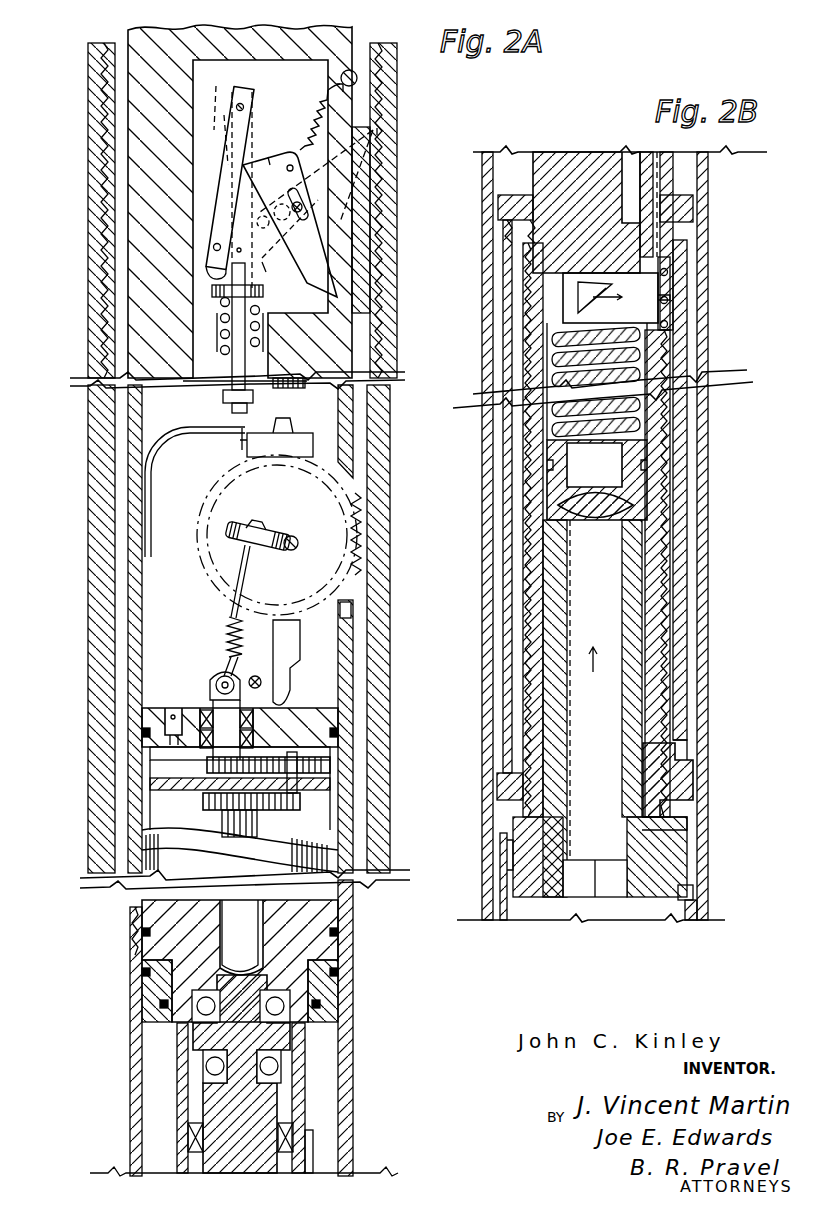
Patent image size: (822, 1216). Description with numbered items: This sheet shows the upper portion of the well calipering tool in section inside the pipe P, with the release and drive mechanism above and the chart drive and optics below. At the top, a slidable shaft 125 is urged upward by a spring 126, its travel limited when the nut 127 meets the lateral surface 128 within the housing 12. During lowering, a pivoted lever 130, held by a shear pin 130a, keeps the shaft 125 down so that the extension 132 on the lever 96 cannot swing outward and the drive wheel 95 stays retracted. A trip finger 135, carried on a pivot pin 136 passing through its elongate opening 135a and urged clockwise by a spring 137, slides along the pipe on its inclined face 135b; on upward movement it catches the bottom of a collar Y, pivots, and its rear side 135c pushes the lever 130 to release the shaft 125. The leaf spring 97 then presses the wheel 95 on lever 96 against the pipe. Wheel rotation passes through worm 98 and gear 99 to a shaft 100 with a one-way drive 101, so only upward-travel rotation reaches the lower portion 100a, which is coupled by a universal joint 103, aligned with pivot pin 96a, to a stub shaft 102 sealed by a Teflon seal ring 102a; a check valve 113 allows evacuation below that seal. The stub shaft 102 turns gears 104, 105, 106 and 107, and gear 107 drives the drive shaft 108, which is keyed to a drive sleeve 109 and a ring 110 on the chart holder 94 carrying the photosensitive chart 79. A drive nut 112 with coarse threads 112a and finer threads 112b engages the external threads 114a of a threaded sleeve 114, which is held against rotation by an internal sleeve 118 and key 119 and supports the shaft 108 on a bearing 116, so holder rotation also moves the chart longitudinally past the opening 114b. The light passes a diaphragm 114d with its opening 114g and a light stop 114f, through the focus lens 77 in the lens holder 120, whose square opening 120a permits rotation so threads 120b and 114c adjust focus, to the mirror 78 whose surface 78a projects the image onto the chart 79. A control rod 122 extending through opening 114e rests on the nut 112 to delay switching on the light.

In FIG. 2A, the housing 12 is at (137, 461).
In FIG. 2B, the housing 12 is at (703, 461).
In FIG. 2A, the pipe P is at (383, 453).
In FIG. 2A, the collar Y is at (390, 182).
In FIG. 2A, the pivoted lever 130 is at (228, 148).
In FIG. 2A, the shear pin 130a is at (226, 246).
In FIG. 2A, the trip finger 135 is at (315, 265).
In FIG. 2A, the elongate opening 135a is at (320, 232).
In FIG. 2A, the inclined face 135b is at (377, 133).
In FIG. 2A, the rear side 135c is at (268, 157).
In FIG. 2A, the pivot pin 136 is at (300, 202).
In FIG. 2A, the spring 137 is at (325, 100).
In FIG. 2A, the slidable shaft 125 is at (229, 408).
In FIG. 2A, the spring 126 is at (224, 300).
In FIG. 2A, the nut 127 is at (227, 396).
In FIG. 2A, the lateral surface 128 is at (268, 388).
In FIG. 2A, the extension 132 is at (282, 418).
In FIG. 2A, the leaf spring 97 is at (173, 453).
In FIG. 2A, the drive wheel 95 is at (350, 541).
In FIG. 2A, the worm 98 is at (292, 536).
In FIG. 2A, the gear 99 is at (266, 527).
In FIG. 2A, the shaft 100 is at (252, 563).
In FIG. 2A, the lower portion of shaft 100a is at (225, 660).
In FIG. 2A, the one-way drive 101 is at (225, 618).
In FIG. 2A, the universal joint 103 is at (212, 676).
In FIG. 2A, the pivoted lever 96 is at (290, 637).
In FIG. 2A, the pivot pin 96a is at (263, 685).
In FIG. 2A, the stub shaft 102 is at (257, 723).
In FIG. 2A, the seal ring 102a is at (205, 717).
In FIG. 2A, the check valve 113 is at (170, 720).
In FIG. 2A, the gear 104 is at (200, 763).
In FIG. 2A, the gear 105 is at (330, 760).
In FIG. 2A, the gear 106 is at (300, 800).
In FIG. 2A, the gear 107 is at (200, 800).
In FIG. 2A, the drive shaft 108 is at (227, 920).
In FIG. 2A, the drive sleeve 109 is at (300, 1067).
In FIG. 2B, the drive sleeve 109 is at (658, 167).
In FIG. 2A, the threaded sleeve 114 is at (210, 1103).
In FIG. 2B, the threaded sleeve 114 is at (650, 563).
In FIG. 2A, the bearing 116 is at (212, 1060).
In FIG. 2B, the ring 110 is at (692, 203).
In FIG. 2B, the chart holder 94 is at (663, 262).
In FIG. 2B, the mirror 78 is at (575, 292).
In FIG. 2B, the mirror surface 78a is at (608, 288).
In FIG. 2B, the chart 79 is at (658, 308).
In FIG. 2B, the external threads 114a is at (660, 508).
In FIG. 2B, the opening 114b is at (658, 320).
In FIG. 2B, the thread 114c is at (658, 810).
In FIG. 2B, the diaphragm 114d is at (664, 280).
In FIG. 2B, the opening 114e is at (502, 852).
In FIG. 2B, the light stop 114f is at (640, 408).
In FIG. 2B, the opening 114g is at (668, 297).
In FIG. 2B, the focus lens 77 is at (593, 493).
In FIG. 2B, the focus lens holder 120 is at (633, 623).
In FIG. 2B, the square opening 120a is at (608, 887).
In FIG. 2B, the thread 120b is at (687, 838).
In FIG. 2B, the drive nut 112 is at (683, 785).
In FIG. 2B, the threads 112a is at (663, 762).
In FIG. 2B, the threads 112b is at (680, 750).
In FIG. 2B, the internal sleeve 118 is at (697, 907).
In FIG. 2B, the key 119 is at (693, 890).
In FIG. 2B, the control rod 122 is at (503, 825).